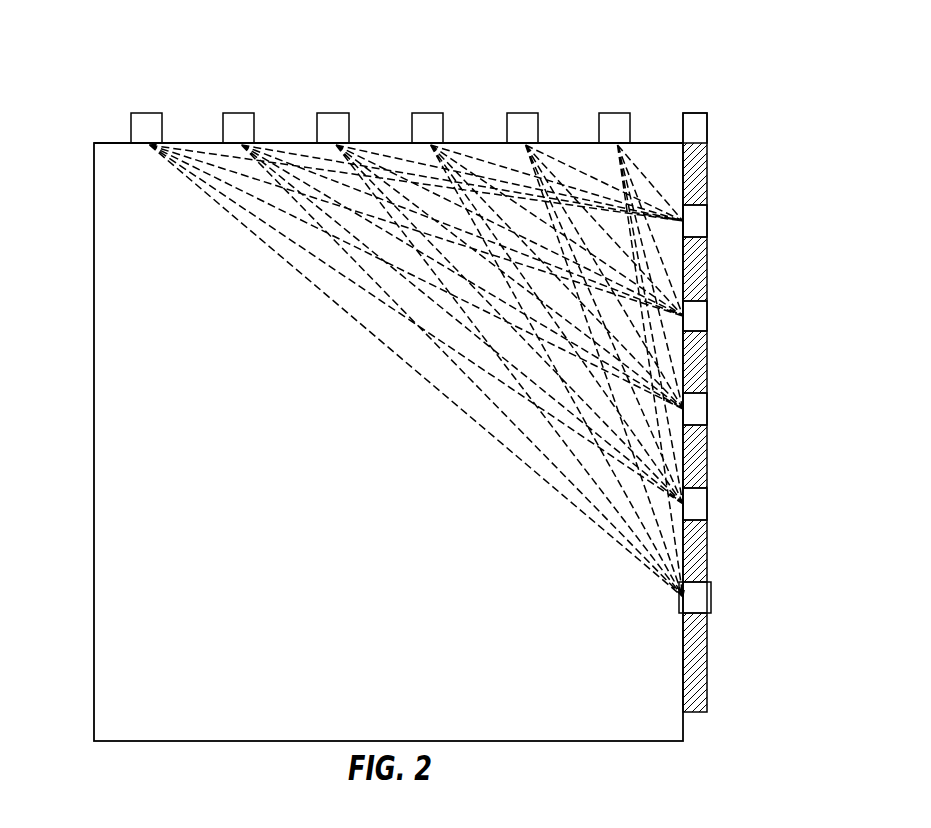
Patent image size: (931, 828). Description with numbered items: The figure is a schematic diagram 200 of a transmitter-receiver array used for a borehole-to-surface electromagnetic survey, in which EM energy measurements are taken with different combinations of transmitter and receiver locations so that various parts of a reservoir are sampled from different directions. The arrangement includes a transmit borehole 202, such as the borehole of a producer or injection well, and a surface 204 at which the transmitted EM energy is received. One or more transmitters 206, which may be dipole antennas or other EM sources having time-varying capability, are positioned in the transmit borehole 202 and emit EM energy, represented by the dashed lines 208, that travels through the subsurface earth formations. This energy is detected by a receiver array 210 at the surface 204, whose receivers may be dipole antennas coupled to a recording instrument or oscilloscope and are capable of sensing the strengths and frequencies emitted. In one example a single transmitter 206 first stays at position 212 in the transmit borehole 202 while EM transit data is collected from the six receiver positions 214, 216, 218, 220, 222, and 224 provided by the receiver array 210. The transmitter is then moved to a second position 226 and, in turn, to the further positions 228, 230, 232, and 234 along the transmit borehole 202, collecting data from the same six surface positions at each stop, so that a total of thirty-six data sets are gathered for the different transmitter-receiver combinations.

The schematic diagram 200 is at (718, 48).
The transmit borehole 202 is at (694, 724).
The surface 204 is at (94, 144).
The transmitter 206 is at (712, 608).
The lines 208 is at (437, 412).
The receiver array 210 is at (396, 82).
The position 212 is at (716, 594).
The position 214 is at (154, 99).
The position 216 is at (247, 99).
The position 218 is at (342, 99).
The position 220 is at (437, 99).
The position 222 is at (531, 99).
The position 224 is at (623, 99).
The position 226 is at (716, 503).
The position 228 is at (716, 410).
The position 230 is at (716, 316).
The position 232 is at (716, 222).
The position 234 is at (716, 128).